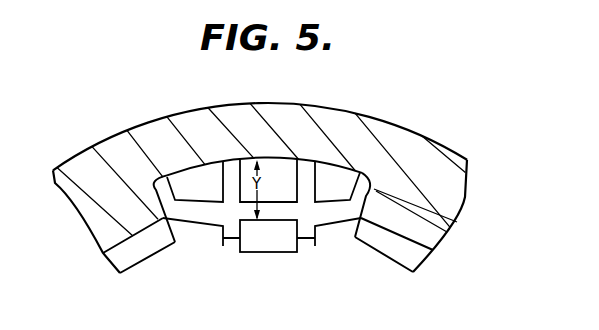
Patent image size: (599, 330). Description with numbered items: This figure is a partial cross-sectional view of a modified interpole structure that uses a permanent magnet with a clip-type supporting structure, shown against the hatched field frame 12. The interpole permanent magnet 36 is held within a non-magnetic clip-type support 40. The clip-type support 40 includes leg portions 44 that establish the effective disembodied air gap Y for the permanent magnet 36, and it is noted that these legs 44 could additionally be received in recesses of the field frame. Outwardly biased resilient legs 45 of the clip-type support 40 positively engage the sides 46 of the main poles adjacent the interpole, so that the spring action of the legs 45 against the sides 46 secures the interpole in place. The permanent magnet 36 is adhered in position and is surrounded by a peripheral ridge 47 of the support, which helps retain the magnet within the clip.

The ring sector housing 12 is at (393, 137).
The leg portions 44 is at (232, 186).
The permanent magnet 36 is at (273, 246).
The peripheral ridge 47 is at (223, 246).
The clip-type support 40 is at (307, 218).
The resilient legs 45 is at (190, 214).
The sides of the main poles 46 is at (447, 231).